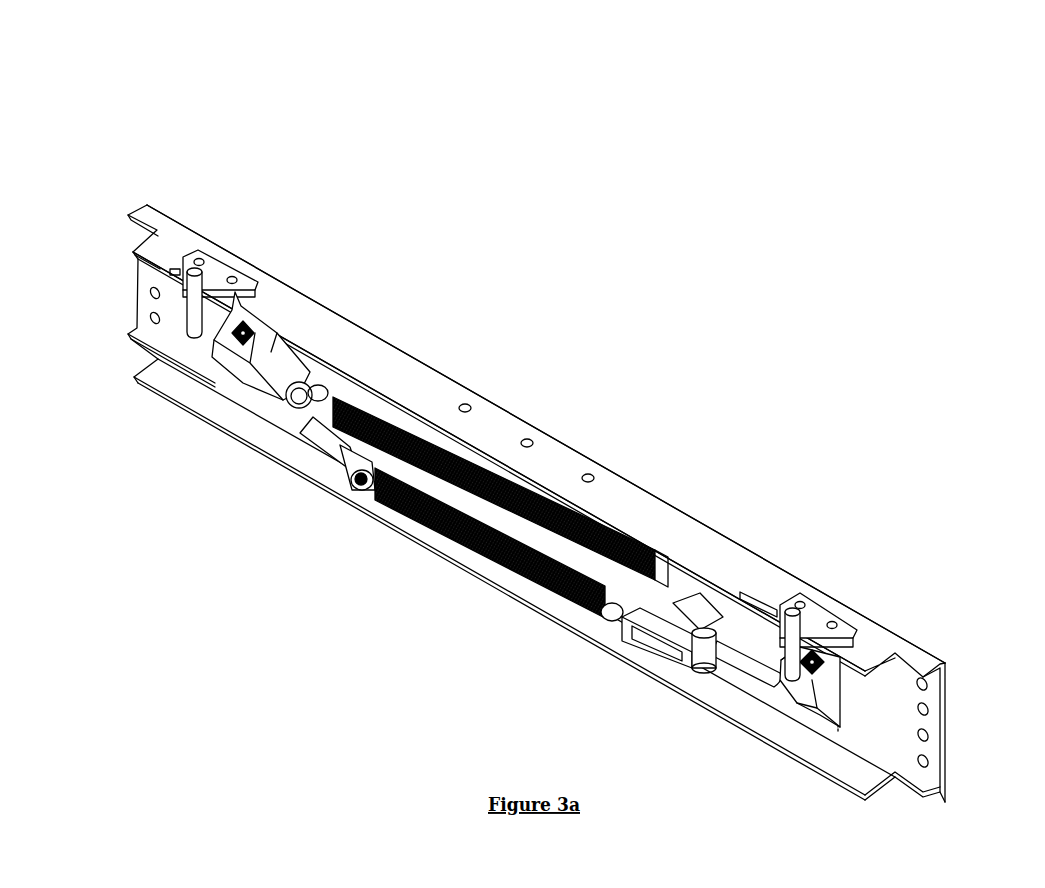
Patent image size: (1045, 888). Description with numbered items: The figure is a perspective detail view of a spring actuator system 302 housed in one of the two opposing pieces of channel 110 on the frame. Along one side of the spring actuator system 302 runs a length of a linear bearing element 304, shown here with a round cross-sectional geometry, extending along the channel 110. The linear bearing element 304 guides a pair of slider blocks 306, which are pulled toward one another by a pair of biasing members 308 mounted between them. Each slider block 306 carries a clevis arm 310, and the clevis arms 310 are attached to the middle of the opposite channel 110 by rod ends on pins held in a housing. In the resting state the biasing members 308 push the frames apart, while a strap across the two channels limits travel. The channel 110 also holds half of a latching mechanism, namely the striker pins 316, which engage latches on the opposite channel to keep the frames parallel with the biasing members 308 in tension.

The channel 110 is at (348, 328).
The spring actuator system 302 is at (528, 405).
The linear bearing element 304 is at (250, 387).
The slider block 306 is at (717, 676).
The biasing member 308 is at (428, 495).
The clevis arm 310 is at (668, 625).
The striker pin 316 is at (798, 653).